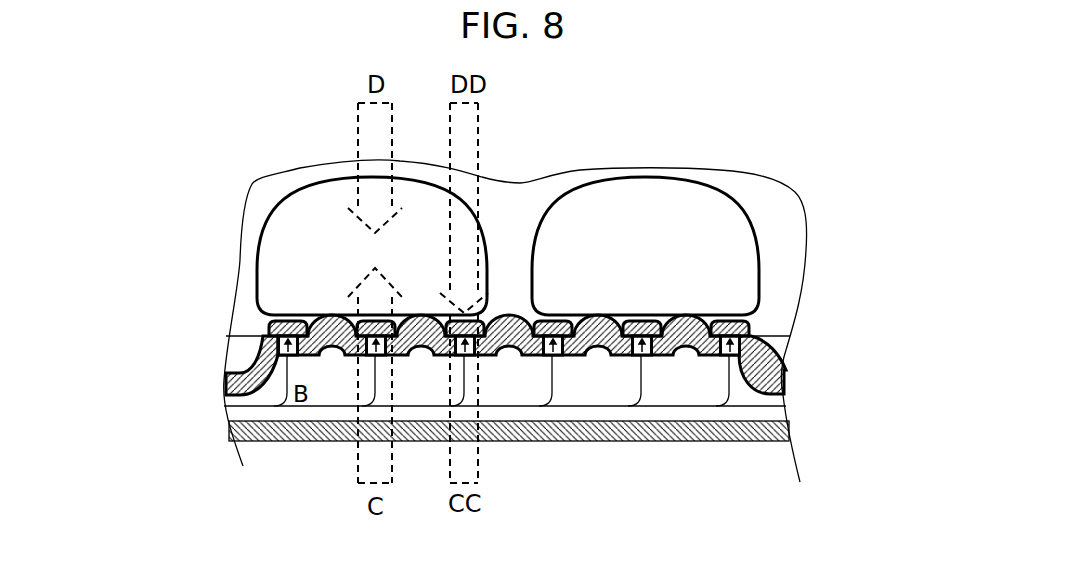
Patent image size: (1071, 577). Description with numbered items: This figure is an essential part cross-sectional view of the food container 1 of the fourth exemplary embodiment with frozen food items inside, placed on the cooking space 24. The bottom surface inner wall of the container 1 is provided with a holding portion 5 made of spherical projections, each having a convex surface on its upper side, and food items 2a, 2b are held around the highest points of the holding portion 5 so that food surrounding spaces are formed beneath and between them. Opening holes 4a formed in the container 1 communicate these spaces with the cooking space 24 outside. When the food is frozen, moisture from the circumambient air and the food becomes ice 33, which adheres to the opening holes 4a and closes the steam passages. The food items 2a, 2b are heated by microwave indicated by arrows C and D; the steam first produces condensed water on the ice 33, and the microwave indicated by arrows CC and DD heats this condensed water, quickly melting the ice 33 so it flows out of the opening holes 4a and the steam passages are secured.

The food item 2a is at (313, 243).
The food item 2b is at (653, 230).
The ice 33 is at (477, 326).
The holding portion 5 is at (418, 355).
The opening holes 4a is at (468, 357).
The container 1 is at (506, 429).
The cooking space 24 is at (663, 442).